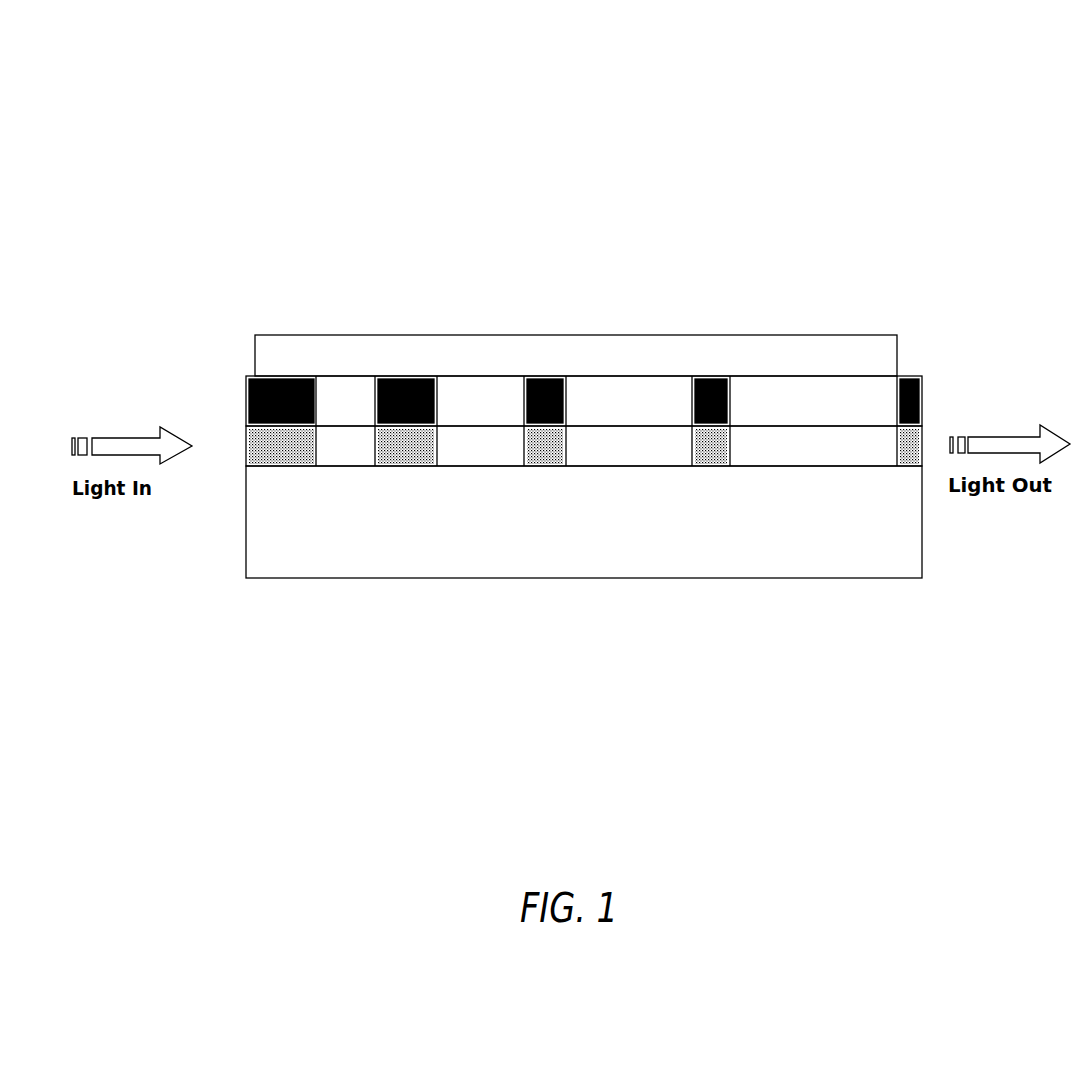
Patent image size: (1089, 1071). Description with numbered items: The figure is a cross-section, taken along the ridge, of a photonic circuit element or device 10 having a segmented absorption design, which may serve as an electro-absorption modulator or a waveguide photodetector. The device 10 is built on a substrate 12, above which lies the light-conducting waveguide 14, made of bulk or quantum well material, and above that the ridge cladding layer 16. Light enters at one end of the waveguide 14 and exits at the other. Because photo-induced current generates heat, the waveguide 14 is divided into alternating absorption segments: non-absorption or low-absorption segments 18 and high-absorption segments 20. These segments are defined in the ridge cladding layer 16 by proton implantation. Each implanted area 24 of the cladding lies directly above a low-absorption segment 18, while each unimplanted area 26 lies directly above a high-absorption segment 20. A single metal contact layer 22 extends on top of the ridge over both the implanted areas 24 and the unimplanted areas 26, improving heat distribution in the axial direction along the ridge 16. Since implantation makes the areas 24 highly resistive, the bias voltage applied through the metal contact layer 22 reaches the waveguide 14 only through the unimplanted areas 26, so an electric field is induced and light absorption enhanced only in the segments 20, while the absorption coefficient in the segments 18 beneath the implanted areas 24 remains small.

The photonic circuit element 10 is at (773, 198).
The substrate 12 is at (855, 578).
The waveguide 14 is at (231, 452).
The ridge cladding layer 16 is at (231, 407).
The low-absorption segment 18 is at (277, 468).
The high-absorption segment 20 is at (340, 468).
The metal contact layer 22 is at (853, 335).
The implanted area 24 is at (275, 376).
The unimplanted area 26 is at (340, 376).